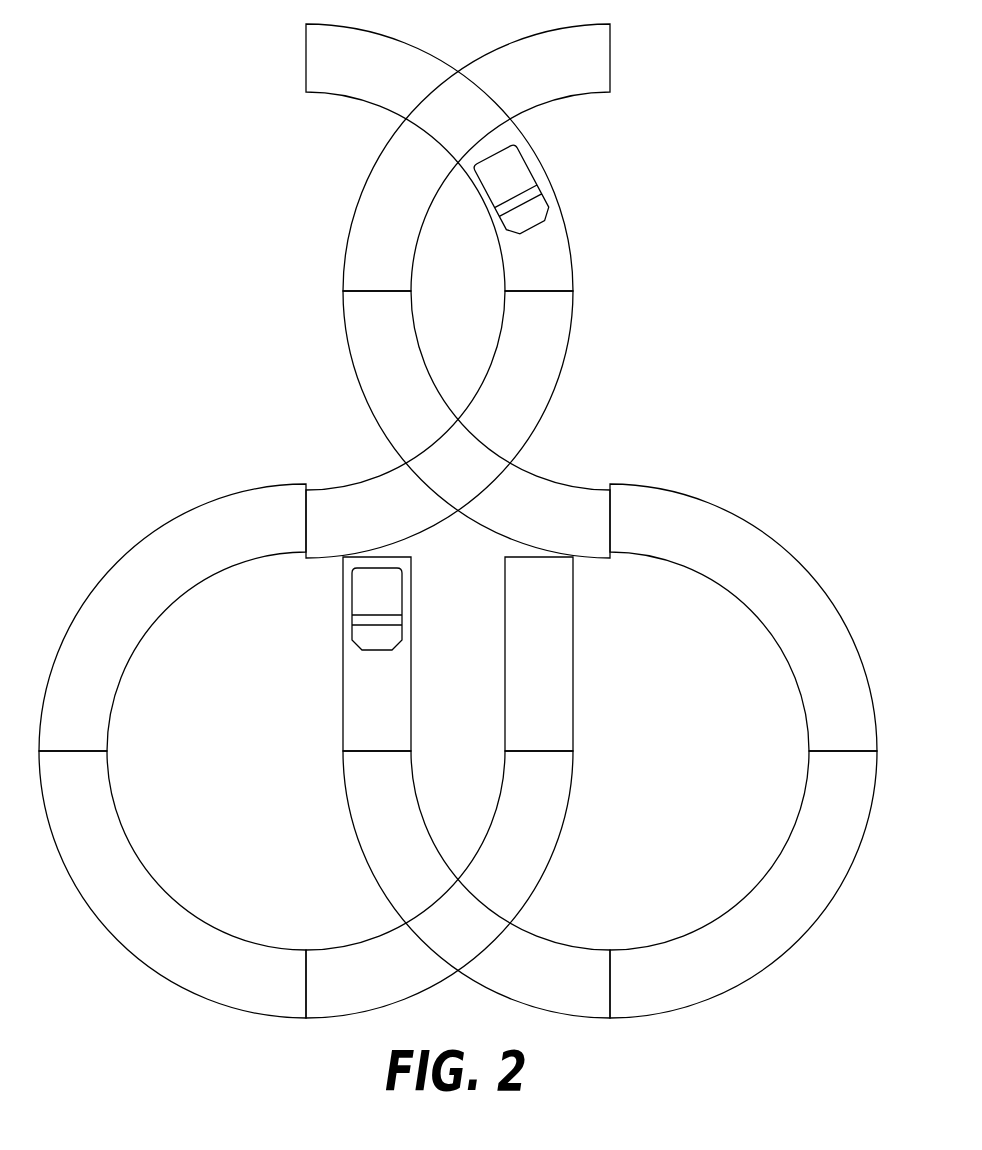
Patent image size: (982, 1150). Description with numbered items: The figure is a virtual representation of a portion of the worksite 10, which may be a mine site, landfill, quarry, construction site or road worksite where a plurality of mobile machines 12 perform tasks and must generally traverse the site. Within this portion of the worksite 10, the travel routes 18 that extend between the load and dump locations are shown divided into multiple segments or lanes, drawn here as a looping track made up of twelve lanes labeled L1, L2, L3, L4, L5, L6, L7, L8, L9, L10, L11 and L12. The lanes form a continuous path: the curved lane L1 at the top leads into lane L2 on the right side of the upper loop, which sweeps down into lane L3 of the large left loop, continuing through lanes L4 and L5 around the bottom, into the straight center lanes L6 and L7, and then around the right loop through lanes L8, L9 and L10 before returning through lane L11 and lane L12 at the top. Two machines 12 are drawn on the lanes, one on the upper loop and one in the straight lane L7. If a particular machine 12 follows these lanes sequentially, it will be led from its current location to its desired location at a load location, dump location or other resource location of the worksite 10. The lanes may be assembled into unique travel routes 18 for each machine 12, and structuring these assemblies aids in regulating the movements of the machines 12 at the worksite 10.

The worksite 10 is at (236, 300).
The mobile machine 12 is at (363, 634).
The travel route 18 is at (457, 424).
The lane L1 is at (439, 157).
The lane L2 is at (293, 392).
The lane L3 is at (172, 617).
The lane L4 is at (172, 884).
The lane L5 is at (439, 884).
The lane L6 is at (539, 654).
The lane L7 is at (377, 654).
The lane L8 is at (476, 884).
The lane L9 is at (743, 884).
The lane L10 is at (743, 617).
The lane L11 is at (476, 424).
The lane L12 is at (476, 157).